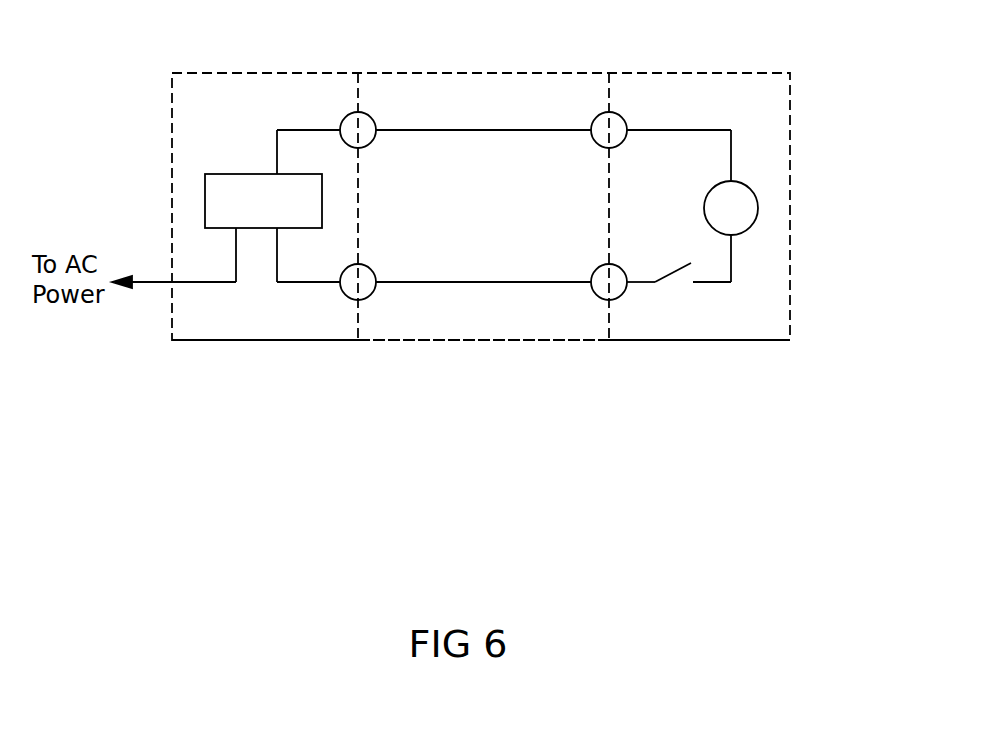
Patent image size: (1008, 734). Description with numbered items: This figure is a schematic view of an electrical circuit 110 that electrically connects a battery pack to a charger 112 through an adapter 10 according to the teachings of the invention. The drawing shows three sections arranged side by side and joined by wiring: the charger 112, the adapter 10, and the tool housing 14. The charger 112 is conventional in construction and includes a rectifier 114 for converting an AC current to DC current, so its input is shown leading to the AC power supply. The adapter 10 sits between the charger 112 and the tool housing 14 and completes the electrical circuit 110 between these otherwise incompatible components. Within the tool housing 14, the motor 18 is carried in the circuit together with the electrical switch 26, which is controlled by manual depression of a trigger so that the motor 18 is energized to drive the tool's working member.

The electrical circuit 110 is at (684, 112).
The rectifier 114 is at (247, 174).
The motor 18 is at (752, 186).
The electrical switch 26 is at (670, 273).
The charger 112 is at (294, 355).
The adapter 10 is at (480, 355).
The tool housing 14 is at (663, 358).